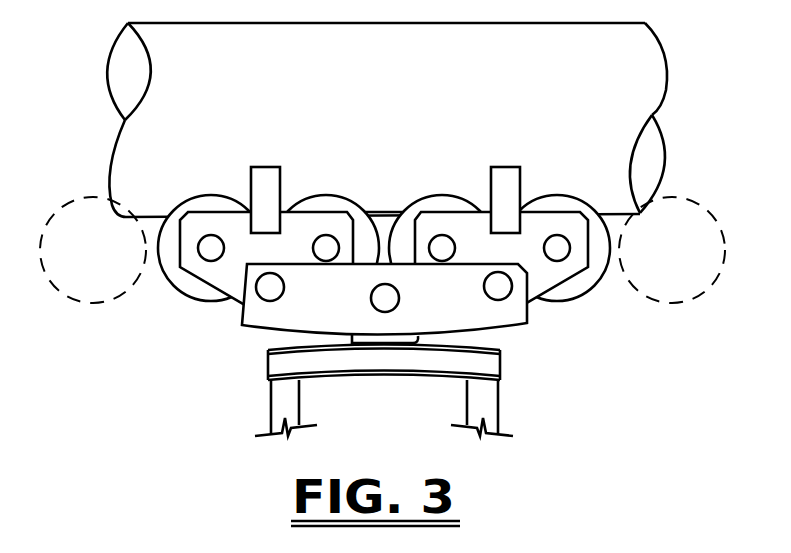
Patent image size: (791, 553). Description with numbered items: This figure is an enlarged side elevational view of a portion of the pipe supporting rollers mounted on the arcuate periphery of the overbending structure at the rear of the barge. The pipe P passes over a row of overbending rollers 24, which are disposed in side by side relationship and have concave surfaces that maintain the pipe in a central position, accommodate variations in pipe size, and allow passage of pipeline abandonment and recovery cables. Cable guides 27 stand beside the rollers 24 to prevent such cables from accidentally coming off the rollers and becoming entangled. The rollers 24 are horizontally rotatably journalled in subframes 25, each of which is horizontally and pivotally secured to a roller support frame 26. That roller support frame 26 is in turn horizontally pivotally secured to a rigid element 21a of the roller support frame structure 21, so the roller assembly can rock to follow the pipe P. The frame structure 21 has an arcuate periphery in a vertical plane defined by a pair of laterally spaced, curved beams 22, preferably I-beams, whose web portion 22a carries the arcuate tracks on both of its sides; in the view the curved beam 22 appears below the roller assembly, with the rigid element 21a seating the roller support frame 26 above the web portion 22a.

The pipe P is at (397, 126).
The roller support frame 21 is at (354, 367).
The rigid element 21a is at (420, 337).
The curved beams 22 is at (385, 381).
The web portion 22a is at (490, 363).
The overbending rollers 24 is at (180, 205).
The subframes 25 is at (208, 277).
The roller support frame 26 is at (338, 307).
The cable guides 27 is at (263, 166).